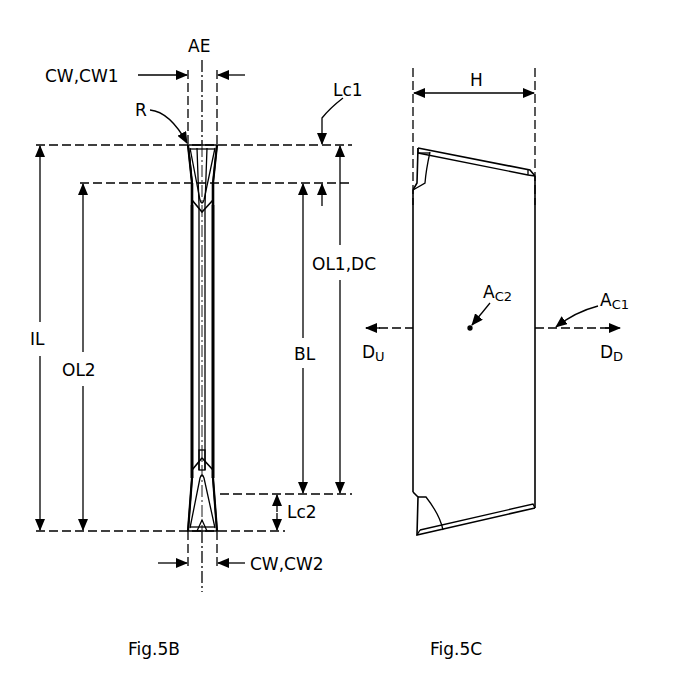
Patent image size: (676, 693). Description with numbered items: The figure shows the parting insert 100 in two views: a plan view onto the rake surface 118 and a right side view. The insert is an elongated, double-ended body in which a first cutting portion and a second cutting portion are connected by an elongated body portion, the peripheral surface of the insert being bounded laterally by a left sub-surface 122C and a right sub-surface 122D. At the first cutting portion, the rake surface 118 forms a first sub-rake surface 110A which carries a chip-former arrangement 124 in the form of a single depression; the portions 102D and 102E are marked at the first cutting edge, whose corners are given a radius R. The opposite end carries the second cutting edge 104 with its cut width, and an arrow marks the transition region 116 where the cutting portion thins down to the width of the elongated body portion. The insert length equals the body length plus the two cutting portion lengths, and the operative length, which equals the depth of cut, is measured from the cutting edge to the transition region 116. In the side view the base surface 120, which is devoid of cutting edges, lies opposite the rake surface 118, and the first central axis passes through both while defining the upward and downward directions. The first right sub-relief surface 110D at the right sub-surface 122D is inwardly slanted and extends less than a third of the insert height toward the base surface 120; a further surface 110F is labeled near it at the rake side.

In FIG. 5B, the parting insert 100 is at (266, 78).
In FIG. 5C, the parting insert 100 is at (544, 62).
In FIG. 5B, the upper cutting edge end 102E is at (221, 140).
In FIG. 5B, the upper cutting edge end 102D is at (188, 148).
In FIG. 5B, the chip-former arrangement 124 is at (255, 178).
In FIG. 5B, the first sub-rake surface 110A is at (206, 174).
In FIG. 5B, the left sub-surface 122C is at (192, 330).
In FIG. 5B, the right sub-surface 122D is at (214, 327).
In FIG. 5C, the right sub-surface 122D is at (497, 257).
In FIG. 5B, the transition region 116 is at (190, 486).
In FIG. 5B, the second cutting edge 104 is at (206, 540).
In FIG. 5C, the upper abutment surface 110F is at (423, 146).
In FIG. 5C, the first right sub-relief surface 110D is at (432, 174).
In FIG. 5C, the rake surface 118 is at (411, 381).
In FIG. 5C, the base surface 120 is at (538, 403).